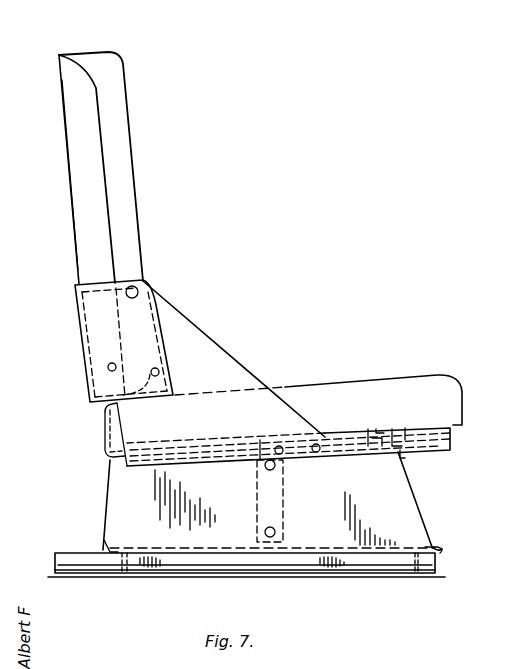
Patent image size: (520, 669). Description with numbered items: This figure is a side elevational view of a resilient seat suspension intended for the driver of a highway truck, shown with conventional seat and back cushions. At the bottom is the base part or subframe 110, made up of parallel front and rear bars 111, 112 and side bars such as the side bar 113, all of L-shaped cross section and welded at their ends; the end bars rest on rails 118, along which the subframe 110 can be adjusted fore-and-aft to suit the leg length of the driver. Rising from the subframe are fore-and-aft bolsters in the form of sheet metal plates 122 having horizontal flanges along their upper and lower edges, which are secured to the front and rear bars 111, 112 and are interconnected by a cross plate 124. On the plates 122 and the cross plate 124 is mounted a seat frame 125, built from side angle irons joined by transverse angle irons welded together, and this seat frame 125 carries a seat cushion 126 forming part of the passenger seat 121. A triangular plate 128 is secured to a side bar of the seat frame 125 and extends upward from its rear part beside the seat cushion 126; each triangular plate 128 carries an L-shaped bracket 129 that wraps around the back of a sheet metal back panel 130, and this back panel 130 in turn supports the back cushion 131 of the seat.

The base part or subframe 110 is at (138, 580).
The front bar 111 is at (435, 548).
The rear bar 112 is at (110, 550).
The side bar 113 is at (218, 565).
The rail 118 is at (303, 573).
The passenger seat 121 is at (136, 102).
The sheet metal plate 122 is at (108, 513).
The cross plate 124 is at (280, 520).
The seat frame 125 is at (458, 440).
The seat cushion 126 is at (402, 362).
The triangular plate 128 is at (212, 352).
The L-shaped bracket 129 is at (88, 338).
The sheet metal back panel 130 is at (77, 230).
The back cushion 131 is at (120, 175).